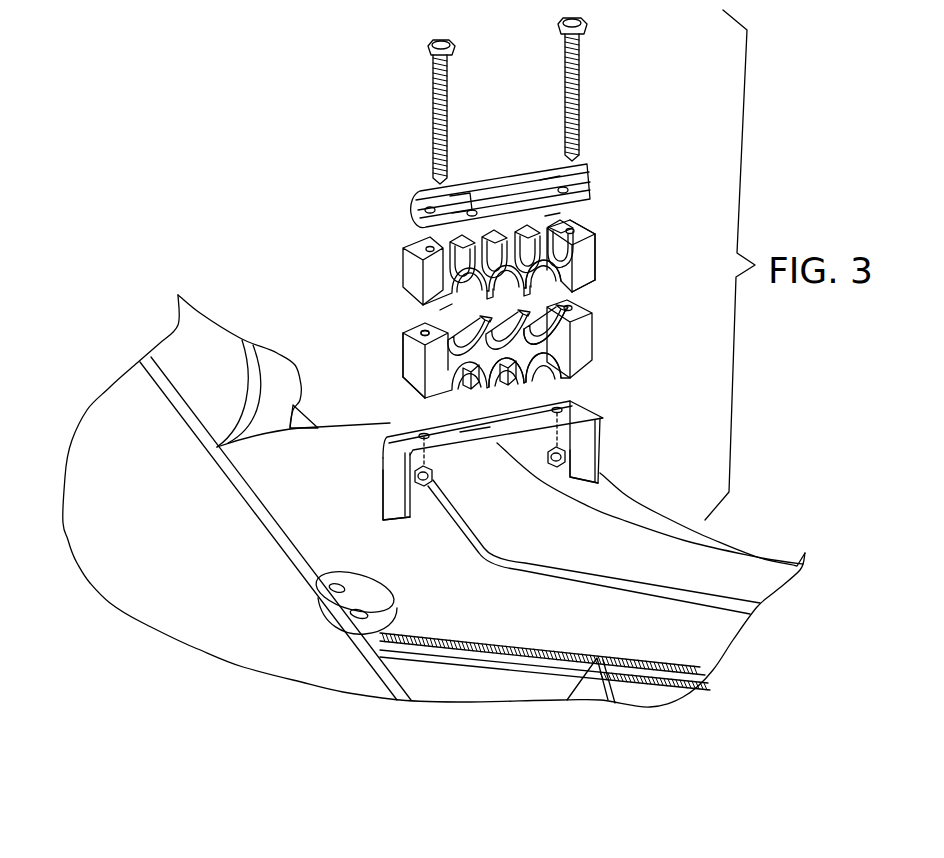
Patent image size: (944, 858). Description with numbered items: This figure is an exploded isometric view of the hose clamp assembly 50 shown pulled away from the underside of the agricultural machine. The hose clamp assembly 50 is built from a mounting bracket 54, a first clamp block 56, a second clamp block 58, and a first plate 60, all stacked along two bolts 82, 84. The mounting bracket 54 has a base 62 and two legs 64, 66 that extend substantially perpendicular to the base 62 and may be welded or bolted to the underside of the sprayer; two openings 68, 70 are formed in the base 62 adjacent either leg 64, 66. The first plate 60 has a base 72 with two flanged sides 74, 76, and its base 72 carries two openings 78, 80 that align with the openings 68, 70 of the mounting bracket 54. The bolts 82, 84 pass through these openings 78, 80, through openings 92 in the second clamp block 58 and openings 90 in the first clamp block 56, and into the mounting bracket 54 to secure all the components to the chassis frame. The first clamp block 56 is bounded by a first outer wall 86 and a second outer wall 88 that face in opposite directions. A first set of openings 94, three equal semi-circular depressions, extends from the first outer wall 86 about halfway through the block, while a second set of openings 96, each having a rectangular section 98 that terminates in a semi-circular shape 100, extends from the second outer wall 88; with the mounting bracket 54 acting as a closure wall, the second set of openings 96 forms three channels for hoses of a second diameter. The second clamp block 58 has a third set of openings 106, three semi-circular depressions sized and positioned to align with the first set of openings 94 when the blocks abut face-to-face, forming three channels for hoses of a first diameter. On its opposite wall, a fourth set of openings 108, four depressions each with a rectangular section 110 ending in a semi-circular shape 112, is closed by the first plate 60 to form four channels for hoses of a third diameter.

The hose clamp assembly 50 is at (318, 172).
The mounting bracket 54 is at (501, 481).
The first clamp block 56 is at (492, 407).
The second clamp block 58 is at (566, 260).
The first plate 60 is at (520, 161).
The base 62 is at (473, 430).
The leg 64 is at (397, 490).
The leg 66 is at (587, 460).
The opening 68 is at (413, 438).
The opening 70 is at (580, 405).
The base 72 is at (553, 172).
The flanged side 74 is at (470, 192).
The flanged side 76 is at (556, 212).
The opening 78 is at (432, 212).
The opening 80 is at (568, 186).
The bolt 82 is at (432, 119).
The bolt 84 is at (578, 100).
The first outer wall 86 is at (405, 337).
The second outer wall 88 is at (400, 410).
The openings 90 is at (433, 330).
The openings 92 is at (580, 232).
The first set of openings 94 is at (452, 328).
The second set of openings 96 is at (506, 387).
The rectangular section 98 is at (540, 367).
The semi-circular shape 100 is at (537, 363).
The third set of openings 106 is at (545, 282).
The fourth set of openings 108 is at (474, 226).
The rectangular section 110 is at (615, 243).
The semi-circular shape 112 is at (592, 262).